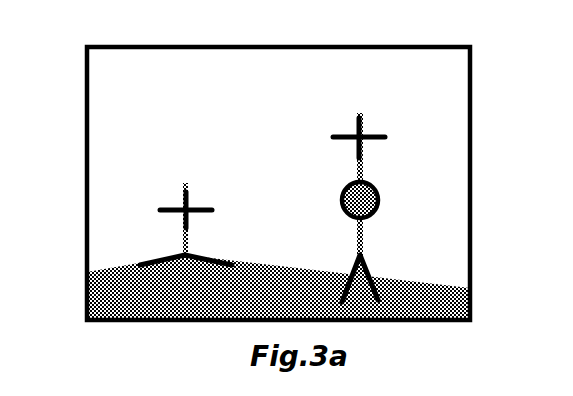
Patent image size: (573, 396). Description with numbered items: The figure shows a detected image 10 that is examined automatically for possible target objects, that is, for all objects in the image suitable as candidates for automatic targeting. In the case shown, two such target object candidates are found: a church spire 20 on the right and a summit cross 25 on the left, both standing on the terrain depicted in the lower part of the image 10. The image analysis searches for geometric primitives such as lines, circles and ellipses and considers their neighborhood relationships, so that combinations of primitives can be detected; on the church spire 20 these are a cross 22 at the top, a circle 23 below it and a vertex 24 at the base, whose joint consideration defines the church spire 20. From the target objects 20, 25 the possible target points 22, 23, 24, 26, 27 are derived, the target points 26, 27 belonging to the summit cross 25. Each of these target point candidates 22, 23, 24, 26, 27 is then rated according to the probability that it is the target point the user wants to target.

The detected image 10 is at (278, 164).
The church spire 20 is at (321, 182).
The cross 22 is at (325, 136).
The circle 23 is at (321, 191).
The vertex 24 is at (328, 272).
The summit cross 25 is at (166, 185).
The target point 26 is at (161, 205).
The target point 27 is at (166, 245).